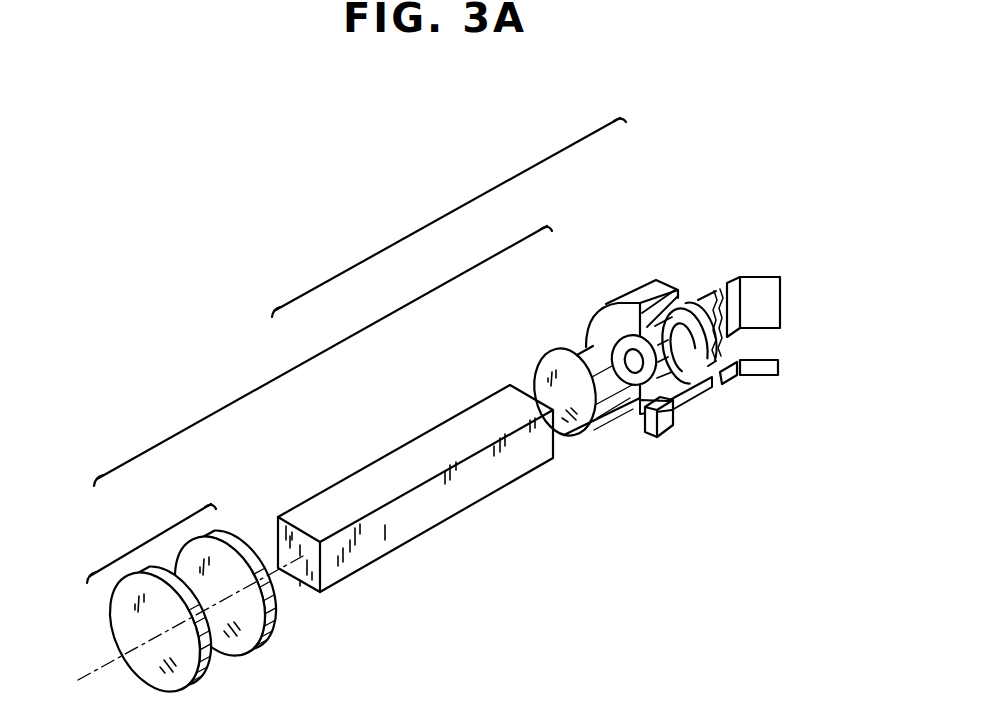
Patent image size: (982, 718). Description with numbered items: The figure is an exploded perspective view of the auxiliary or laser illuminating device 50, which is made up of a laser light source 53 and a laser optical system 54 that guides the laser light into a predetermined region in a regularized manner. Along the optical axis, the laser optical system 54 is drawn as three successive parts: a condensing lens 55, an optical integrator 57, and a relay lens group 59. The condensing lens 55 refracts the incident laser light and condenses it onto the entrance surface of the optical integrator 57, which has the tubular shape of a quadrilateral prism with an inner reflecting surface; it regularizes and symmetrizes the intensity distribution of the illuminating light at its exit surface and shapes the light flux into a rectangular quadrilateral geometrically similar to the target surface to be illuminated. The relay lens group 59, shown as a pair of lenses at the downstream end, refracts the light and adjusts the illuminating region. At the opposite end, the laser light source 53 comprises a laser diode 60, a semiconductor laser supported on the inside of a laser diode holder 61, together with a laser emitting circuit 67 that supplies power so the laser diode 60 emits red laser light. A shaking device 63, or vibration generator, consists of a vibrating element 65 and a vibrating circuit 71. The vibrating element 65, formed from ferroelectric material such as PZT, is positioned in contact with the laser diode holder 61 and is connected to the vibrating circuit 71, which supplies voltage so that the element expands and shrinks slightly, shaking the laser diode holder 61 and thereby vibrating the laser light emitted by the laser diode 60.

The laser illuminating device 50 is at (438, 220).
The laser light source 53 is at (637, 247).
The laser optical system 54 is at (326, 345).
The condensing lens 55 is at (573, 362).
The optical integrator 57 is at (397, 463).
The relay lens group 59 is at (152, 534).
The laser diode 60 is at (687, 306).
The laser diode holder 61 is at (635, 288).
The shaking device 63 is at (648, 443).
The vibrating element 65 is at (665, 427).
The laser emitting circuit 67 is at (762, 282).
The vibrating circuit 71 is at (758, 375).